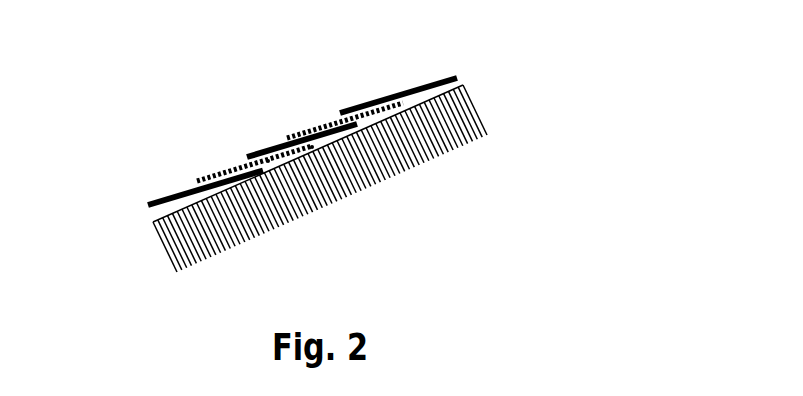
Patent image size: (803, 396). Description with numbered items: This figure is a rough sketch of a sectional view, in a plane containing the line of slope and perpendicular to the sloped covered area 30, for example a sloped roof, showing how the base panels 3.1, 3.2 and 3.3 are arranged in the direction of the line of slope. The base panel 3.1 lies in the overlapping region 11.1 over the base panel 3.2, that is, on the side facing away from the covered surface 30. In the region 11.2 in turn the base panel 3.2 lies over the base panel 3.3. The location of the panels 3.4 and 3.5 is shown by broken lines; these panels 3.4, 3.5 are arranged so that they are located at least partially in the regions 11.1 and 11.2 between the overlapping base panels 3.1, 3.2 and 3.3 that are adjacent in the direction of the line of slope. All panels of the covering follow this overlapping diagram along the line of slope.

The overlapping region 11.1 is at (364, 140).
The region 11.2 is at (258, 158).
The base panel 3.1 is at (416, 87).
The base panel 3.2 is at (284, 143).
The base panel 3.3 is at (182, 191).
The panel 3.4 is at (325, 124).
The panel 3.5 is at (269, 160).
The sloped covered area 30 is at (312, 146).